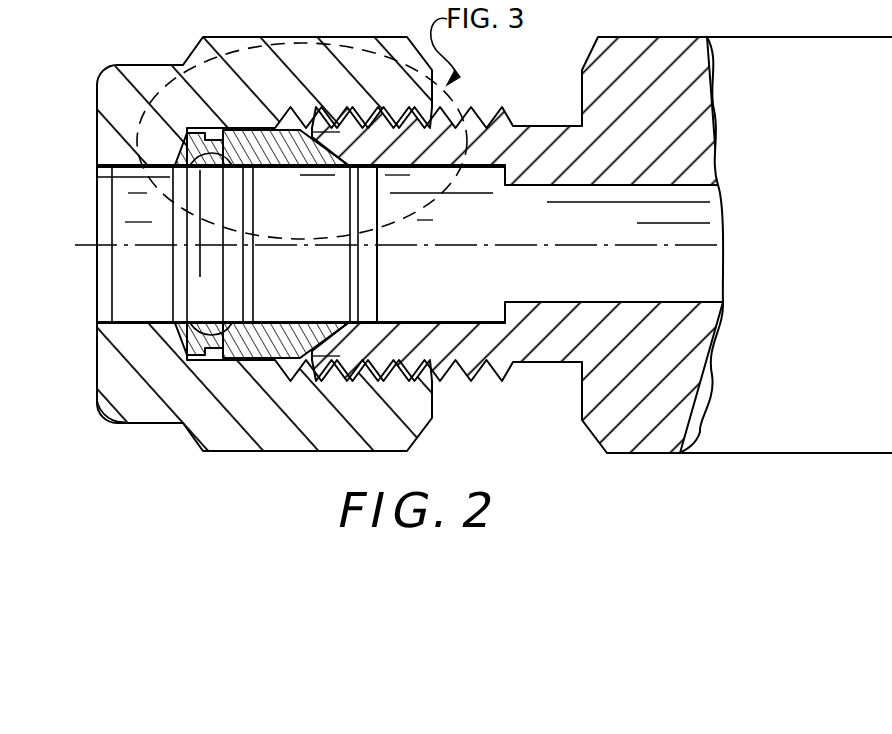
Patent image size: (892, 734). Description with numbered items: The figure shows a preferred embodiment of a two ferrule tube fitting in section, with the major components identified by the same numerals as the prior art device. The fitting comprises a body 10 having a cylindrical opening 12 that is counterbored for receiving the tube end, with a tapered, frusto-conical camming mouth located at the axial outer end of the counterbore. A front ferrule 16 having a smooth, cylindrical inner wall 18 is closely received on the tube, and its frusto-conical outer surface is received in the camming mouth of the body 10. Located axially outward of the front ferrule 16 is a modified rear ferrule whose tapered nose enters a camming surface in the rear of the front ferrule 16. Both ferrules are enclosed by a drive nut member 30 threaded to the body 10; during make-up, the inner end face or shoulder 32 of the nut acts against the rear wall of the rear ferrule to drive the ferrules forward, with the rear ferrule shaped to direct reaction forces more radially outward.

The body 10 is at (722, 117).
The cylindrical opening 12 is at (437, 170).
The front ferrule 16 is at (283, 173).
The inner wall 18 is at (287, 322).
The drive nut member 30 is at (185, 63).
The shoulder 32 is at (95, 366).